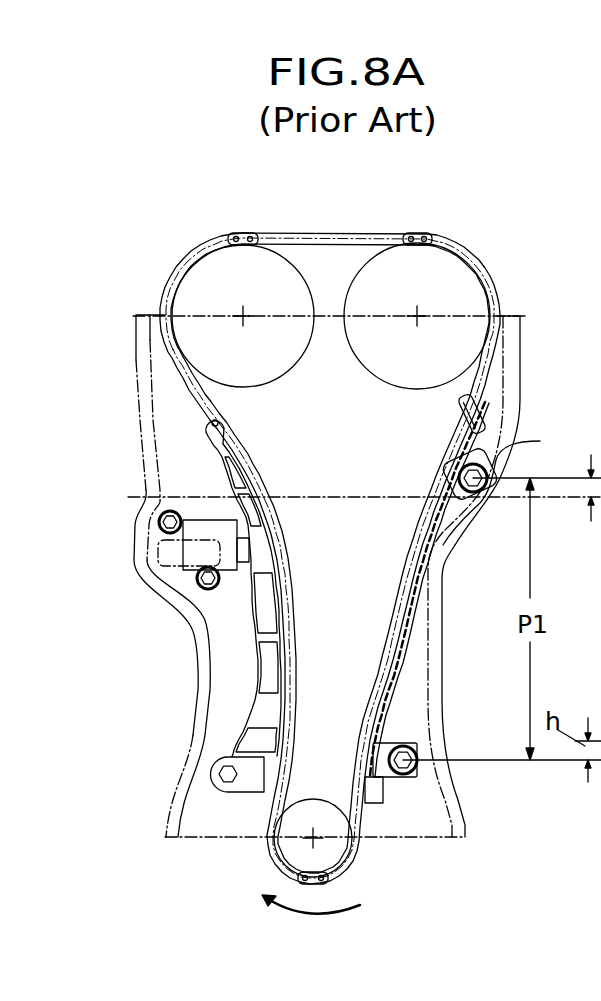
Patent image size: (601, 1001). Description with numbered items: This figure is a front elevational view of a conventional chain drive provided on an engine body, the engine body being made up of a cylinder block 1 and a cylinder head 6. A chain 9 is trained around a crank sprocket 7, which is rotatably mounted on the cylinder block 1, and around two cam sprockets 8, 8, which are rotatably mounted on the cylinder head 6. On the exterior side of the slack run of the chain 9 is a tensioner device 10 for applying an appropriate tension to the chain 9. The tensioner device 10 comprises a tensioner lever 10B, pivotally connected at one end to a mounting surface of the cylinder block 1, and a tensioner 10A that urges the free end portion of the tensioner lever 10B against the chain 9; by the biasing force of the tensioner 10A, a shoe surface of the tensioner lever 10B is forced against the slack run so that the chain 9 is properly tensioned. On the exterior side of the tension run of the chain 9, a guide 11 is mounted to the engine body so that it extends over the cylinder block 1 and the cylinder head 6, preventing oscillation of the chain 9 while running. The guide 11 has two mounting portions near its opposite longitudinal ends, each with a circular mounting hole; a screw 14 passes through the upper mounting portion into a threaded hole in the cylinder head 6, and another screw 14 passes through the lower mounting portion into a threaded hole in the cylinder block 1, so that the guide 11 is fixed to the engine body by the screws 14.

The cylinder block 1 is at (175, 765).
The cylinder head 6 is at (136, 362).
The crank sprocket 7 is at (330, 847).
The cam sprocket 8 is at (212, 270).
The chain 9 is at (467, 250).
The tensioner device 10 is at (124, 535).
The tensioner 10A is at (170, 590).
The tensioner lever 10B is at (257, 655).
The guide 11 is at (402, 670).
The screw 14 is at (484, 462).